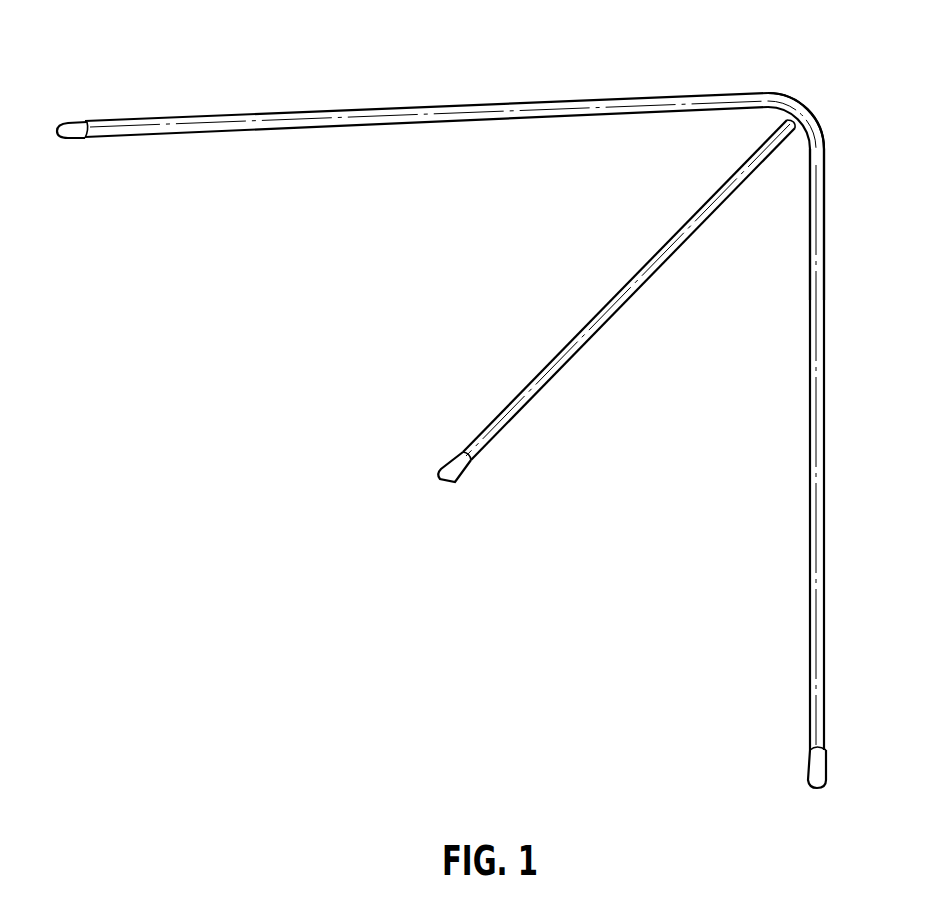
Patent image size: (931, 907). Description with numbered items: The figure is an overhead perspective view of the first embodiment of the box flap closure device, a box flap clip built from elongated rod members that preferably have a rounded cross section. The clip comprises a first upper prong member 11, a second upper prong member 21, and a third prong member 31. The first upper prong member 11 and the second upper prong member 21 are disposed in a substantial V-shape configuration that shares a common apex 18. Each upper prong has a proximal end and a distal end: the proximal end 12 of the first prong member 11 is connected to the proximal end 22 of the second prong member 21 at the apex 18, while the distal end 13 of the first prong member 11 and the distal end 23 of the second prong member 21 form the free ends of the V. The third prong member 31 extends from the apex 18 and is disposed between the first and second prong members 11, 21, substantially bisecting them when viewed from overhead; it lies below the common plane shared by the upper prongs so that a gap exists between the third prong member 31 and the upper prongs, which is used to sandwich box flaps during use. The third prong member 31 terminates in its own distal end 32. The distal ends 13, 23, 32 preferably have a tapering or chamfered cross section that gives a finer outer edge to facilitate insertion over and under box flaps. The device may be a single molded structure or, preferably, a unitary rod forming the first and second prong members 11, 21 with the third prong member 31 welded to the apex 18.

The first upper prong member 11 is at (508, 96).
The proximal end of the first prong member 12 is at (755, 97).
The distal end of the first prong member 13 is at (72, 128).
The common apex 18 is at (800, 107).
The second upper prong member 21 is at (824, 407).
The proximal end of the second prong member 22 is at (823, 177).
The distal end of the second prong member 23 is at (818, 772).
The third prong member 31 is at (589, 348).
The distal end of the third prong member 32 is at (453, 483).